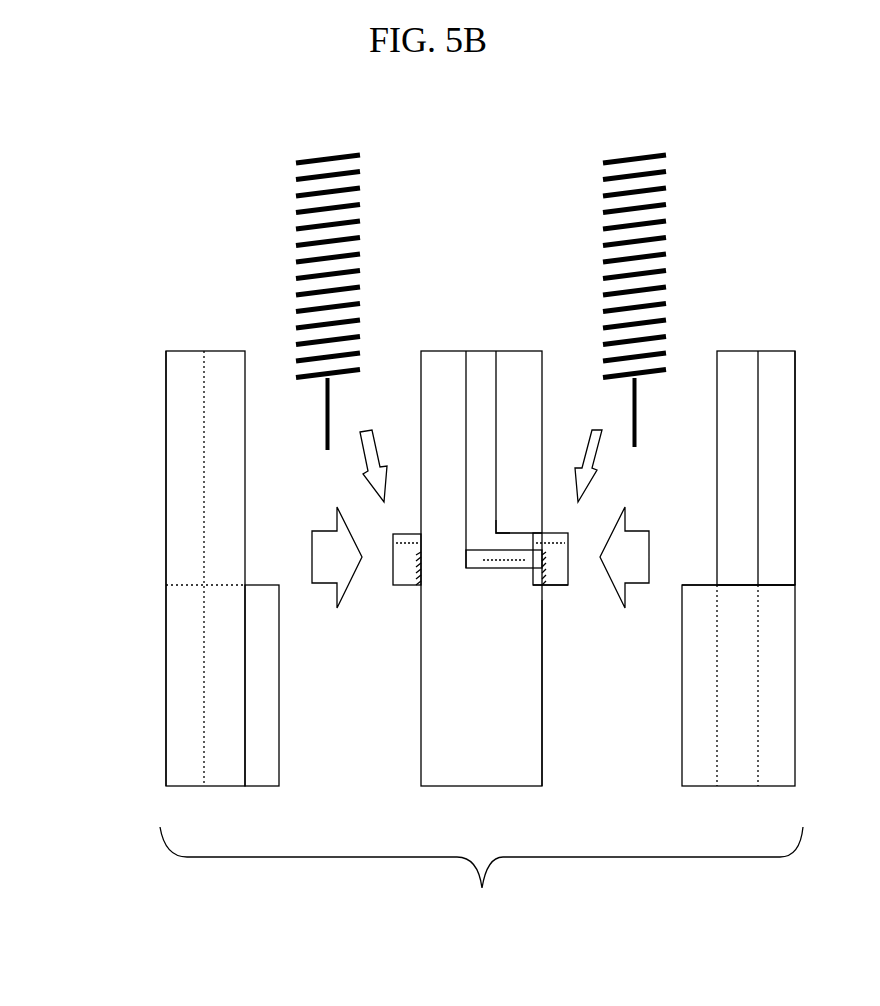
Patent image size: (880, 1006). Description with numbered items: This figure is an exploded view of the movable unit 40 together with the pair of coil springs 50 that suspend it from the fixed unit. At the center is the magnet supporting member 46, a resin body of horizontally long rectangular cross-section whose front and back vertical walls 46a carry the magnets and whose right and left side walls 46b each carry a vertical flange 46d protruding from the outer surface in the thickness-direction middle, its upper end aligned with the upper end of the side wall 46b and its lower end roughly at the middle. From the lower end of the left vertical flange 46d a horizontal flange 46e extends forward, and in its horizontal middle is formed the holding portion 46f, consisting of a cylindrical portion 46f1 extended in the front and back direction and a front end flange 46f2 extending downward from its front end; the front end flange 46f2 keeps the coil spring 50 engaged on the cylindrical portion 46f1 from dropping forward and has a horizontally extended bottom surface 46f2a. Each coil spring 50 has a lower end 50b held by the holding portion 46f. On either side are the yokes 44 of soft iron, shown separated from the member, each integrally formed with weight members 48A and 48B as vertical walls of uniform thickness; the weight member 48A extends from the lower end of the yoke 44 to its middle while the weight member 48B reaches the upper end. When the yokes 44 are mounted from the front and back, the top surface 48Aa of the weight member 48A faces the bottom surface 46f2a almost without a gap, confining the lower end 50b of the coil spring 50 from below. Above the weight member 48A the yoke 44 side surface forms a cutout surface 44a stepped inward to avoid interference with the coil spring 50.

The movable unit 40 is at (481, 877).
The yoke 44 is at (165, 568).
The cutout surface 44a is at (773, 440).
The magnet supporting member 46 is at (509, 348).
The vertical wall 46a is at (542, 687).
The side wall 46b is at (523, 422).
The vertical flange 46d is at (477, 442).
The horizontal flange 46e is at (512, 540).
The holding portion 46f is at (500, 647).
The cylindrical portion 46f1 is at (508, 570).
The front end flange 46f2 is at (552, 573).
The bottom surface 46f2a is at (553, 590).
The weight member 48A is at (264, 707).
The top surface 48Aa is at (737, 583).
The weight member 48B is at (735, 383).
The coil spring 50 is at (296, 212).
The lower end 50b is at (323, 412).